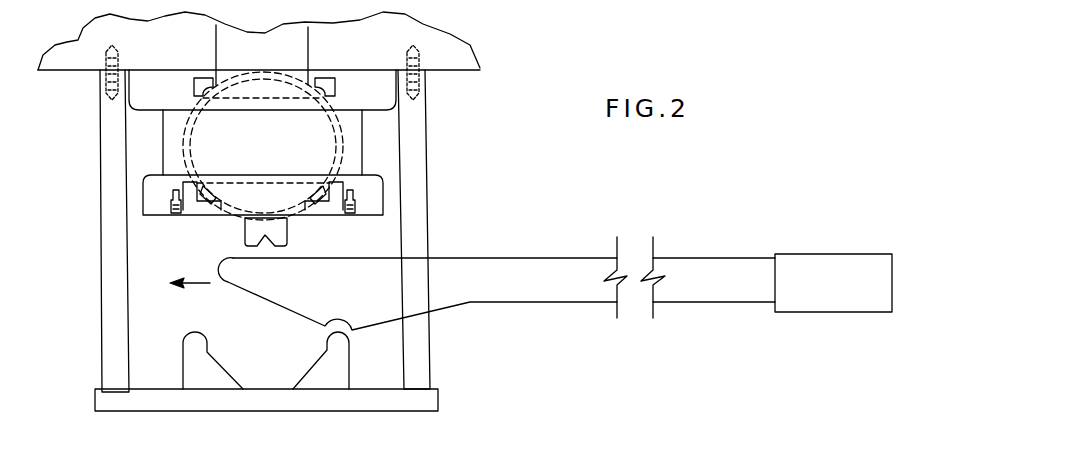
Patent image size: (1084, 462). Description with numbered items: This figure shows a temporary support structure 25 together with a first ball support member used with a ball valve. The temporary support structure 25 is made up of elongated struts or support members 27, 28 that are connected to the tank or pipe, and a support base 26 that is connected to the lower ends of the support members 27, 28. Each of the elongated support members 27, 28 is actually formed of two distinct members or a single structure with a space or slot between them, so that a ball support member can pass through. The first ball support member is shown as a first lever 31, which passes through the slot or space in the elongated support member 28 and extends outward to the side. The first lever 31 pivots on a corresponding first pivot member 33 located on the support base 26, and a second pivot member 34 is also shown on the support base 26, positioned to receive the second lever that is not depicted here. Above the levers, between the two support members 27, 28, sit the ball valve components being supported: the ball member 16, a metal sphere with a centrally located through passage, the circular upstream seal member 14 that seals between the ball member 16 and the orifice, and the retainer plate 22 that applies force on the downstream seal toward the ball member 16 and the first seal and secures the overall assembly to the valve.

The upstream seal member 14 is at (333, 87).
The ball member 16 is at (280, 138).
The retainer plate 22 is at (340, 195).
The temporary support structure 25 is at (306, 258).
The support base 26 is at (358, 407).
The support member 27 is at (110, 222).
The support member 28 is at (417, 217).
The first lever 31 is at (558, 267).
The first pivot member 33 is at (339, 354).
The second pivot member 34 is at (196, 352).